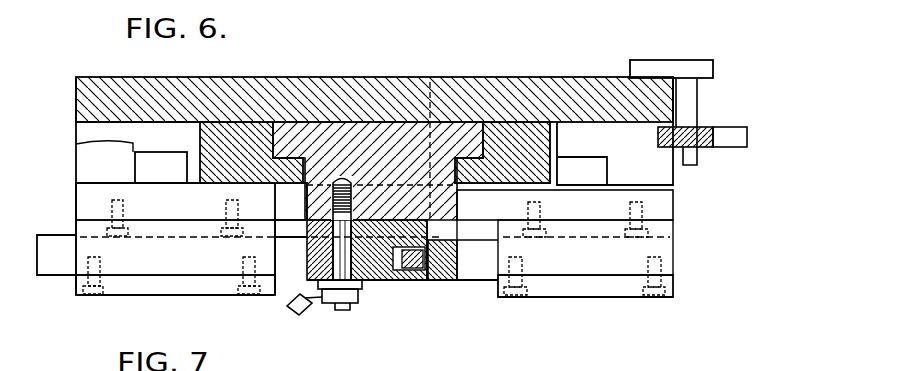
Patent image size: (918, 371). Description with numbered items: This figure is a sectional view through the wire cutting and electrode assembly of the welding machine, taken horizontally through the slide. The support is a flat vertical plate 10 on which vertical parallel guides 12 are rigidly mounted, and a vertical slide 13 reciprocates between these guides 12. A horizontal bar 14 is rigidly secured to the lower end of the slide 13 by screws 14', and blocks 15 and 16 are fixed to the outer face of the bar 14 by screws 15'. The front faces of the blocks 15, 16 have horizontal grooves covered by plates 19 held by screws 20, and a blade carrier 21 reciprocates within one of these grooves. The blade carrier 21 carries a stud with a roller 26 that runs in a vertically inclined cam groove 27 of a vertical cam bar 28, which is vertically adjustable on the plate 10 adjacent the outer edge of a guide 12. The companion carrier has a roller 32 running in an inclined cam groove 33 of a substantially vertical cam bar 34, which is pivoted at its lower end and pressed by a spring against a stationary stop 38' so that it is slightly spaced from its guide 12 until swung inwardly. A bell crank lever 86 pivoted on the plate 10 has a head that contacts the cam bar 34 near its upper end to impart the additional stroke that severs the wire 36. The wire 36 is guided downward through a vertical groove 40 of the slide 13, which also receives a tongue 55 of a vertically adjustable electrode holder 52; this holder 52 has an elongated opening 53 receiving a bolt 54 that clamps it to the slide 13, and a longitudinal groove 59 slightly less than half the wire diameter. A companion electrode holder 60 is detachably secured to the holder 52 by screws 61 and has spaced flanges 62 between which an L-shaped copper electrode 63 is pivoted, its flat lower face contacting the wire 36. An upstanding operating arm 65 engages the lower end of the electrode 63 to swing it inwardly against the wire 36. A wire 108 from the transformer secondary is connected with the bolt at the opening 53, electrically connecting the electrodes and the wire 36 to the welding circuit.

The vertical plate 10 is at (582, 80).
The vertical parallel guides 12 is at (247, 130).
The vertical slide 13 is at (320, 127).
The screws 14' is at (382, 132).
The horizontal bar 14 is at (380, 201).
The block 15 is at (357, 240).
The screws 15' is at (377, 229).
The block 16 is at (675, 245).
The plates 19 is at (175, 287).
The screws 20 is at (97, 295).
The blade carrier 21 is at (45, 262).
The roller 26 is at (135, 168).
The cam groove 27 is at (100, 143).
The cam bar 28 is at (90, 132).
The roller 32 is at (602, 178).
The cam groove 33 is at (590, 157).
The cam bar 34 is at (670, 175).
The wire 36 is at (387, 283).
The stationary stop 38' is at (690, 112).
The vertical groove 40 is at (325, 200).
The electrode holder 52 is at (365, 282).
The elongated opening 53 is at (312, 278).
The bolt 54 is at (348, 310).
The tongue 55 is at (322, 207).
The longitudinal groove 59 is at (372, 282).
The companion electrode holder 60 is at (423, 282).
The screws 61 is at (263, 221).
The flanges 62 is at (447, 210).
The L-shaped electrode 63 is at (442, 282).
The operating arm 65 is at (458, 280).
The bell crank lever 86 is at (755, 139).
The wire 108 is at (312, 298).